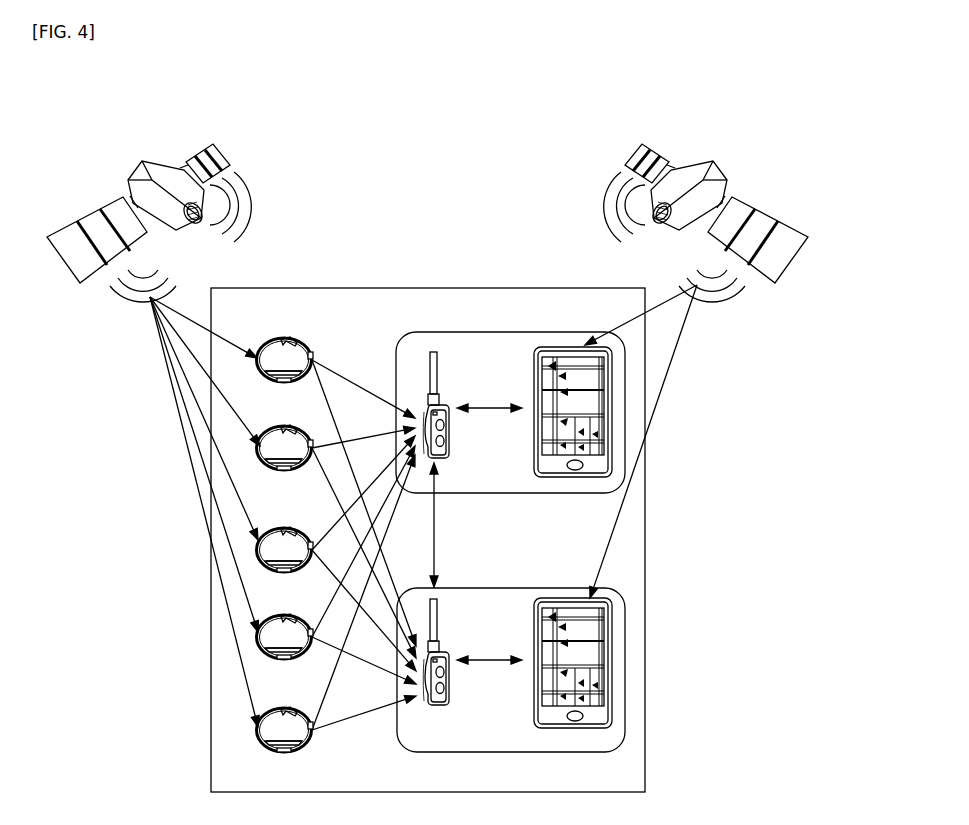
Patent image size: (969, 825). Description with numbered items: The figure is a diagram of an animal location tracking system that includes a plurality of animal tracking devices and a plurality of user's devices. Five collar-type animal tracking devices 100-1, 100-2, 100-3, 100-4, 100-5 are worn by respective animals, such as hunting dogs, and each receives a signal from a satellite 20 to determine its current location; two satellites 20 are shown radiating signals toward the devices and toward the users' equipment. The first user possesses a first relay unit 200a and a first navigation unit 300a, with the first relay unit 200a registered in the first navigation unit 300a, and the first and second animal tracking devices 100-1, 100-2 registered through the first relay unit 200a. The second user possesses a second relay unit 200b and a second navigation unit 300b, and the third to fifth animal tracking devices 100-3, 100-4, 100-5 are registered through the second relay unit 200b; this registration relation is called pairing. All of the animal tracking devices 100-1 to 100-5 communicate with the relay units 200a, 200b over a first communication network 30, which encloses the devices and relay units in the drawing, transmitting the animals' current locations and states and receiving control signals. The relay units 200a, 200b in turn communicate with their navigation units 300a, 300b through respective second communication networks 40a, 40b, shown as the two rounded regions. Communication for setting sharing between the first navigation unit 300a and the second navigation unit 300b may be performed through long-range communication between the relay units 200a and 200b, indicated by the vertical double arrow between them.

The satellite 20 is at (158, 163).
The first communication network 30 is at (330, 288).
The first animal tracking device 100-1 is at (282, 341).
The second animal tracking device 100-2 is at (282, 429).
The third animal tracking device 100-3 is at (282, 531).
The fourth animal tracking device 100-4 is at (282, 618).
The fifth animal tracking device 100-5 is at (282, 711).
The second communication network 40a is at (458, 332).
The second communication network 40b is at (505, 588).
The first relay unit 200a is at (448, 410).
The second relay unit 200b is at (448, 660).
The first navigation unit 300a is at (560, 347).
The second navigation unit 300b is at (612, 660).